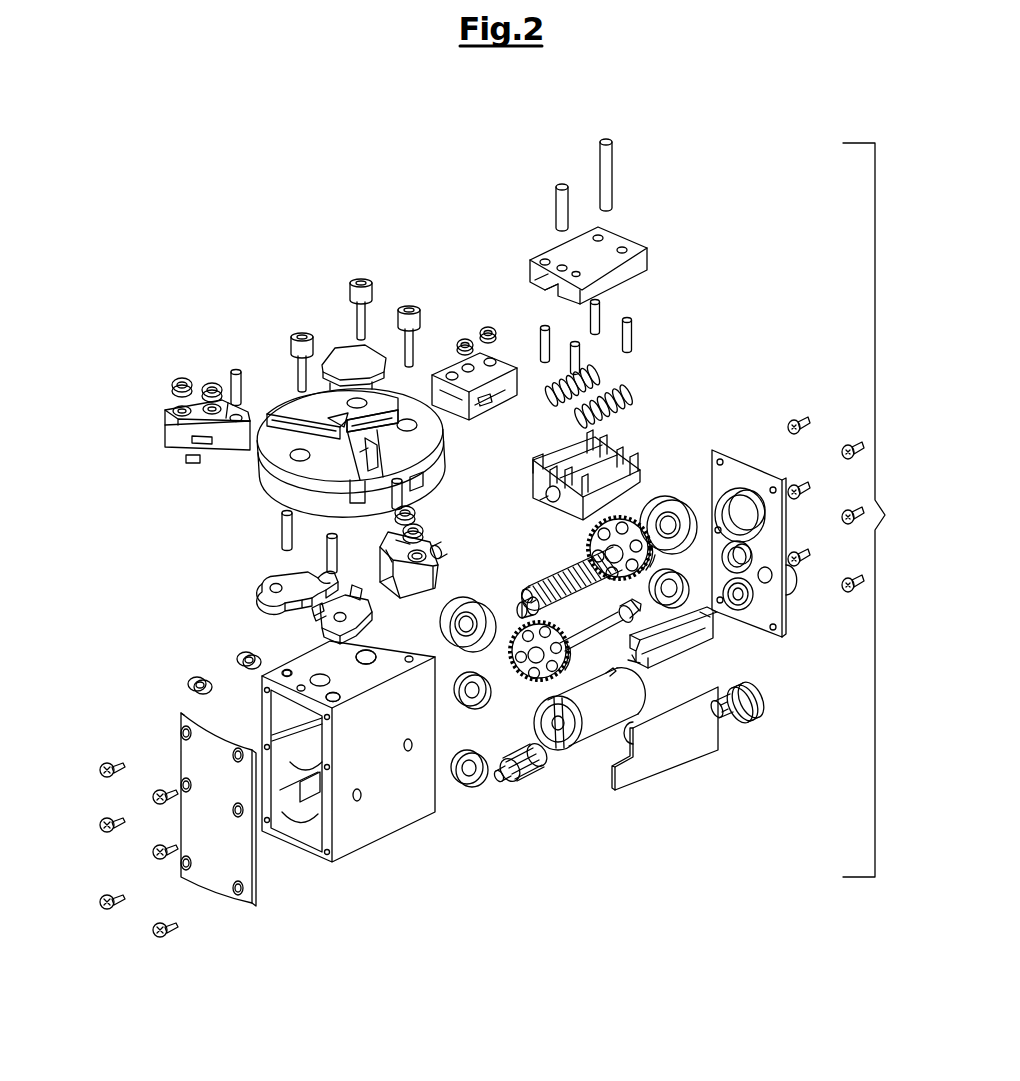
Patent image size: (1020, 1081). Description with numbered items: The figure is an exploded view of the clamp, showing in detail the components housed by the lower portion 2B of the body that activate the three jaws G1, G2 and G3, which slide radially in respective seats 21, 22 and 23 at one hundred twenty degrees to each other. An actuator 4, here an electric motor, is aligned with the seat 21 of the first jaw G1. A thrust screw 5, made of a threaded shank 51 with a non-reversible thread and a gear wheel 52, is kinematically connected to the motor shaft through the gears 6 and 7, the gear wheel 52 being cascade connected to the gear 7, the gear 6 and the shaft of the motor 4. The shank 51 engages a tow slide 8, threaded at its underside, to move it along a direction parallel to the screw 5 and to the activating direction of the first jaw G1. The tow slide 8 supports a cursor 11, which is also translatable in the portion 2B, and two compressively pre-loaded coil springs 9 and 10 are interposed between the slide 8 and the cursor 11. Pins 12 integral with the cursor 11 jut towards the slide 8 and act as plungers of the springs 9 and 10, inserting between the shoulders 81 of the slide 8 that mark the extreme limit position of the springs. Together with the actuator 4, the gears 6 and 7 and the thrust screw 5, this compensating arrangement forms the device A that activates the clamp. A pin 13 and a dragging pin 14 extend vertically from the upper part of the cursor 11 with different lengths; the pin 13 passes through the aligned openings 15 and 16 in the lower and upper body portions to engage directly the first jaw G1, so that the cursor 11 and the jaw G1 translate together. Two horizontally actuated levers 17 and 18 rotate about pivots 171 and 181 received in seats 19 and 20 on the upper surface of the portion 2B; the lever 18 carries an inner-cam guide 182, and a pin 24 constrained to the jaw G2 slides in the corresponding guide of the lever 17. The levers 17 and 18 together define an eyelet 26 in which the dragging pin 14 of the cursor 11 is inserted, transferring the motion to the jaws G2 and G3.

The lower portion 2B is at (376, 824).
The actuator 4 is at (591, 728).
The thrust screw 5 is at (597, 546).
The threaded shank 51 is at (570, 565).
The gear wheel 52 is at (628, 515).
The gear 6 is at (523, 762).
The gear 7 is at (580, 635).
The tow slide 8 is at (608, 468).
The shoulders 81 is at (640, 468).
The coil spring 9 is at (631, 396).
The coil spring 10 is at (598, 380).
The cursor 11 is at (634, 258).
The pins 12 is at (629, 318).
The pin 13 is at (612, 158).
The dragging pin 14 is at (558, 203).
The opening 15 is at (362, 656).
The opening 16 is at (362, 450).
The lever 17 is at (290, 580).
The pivot 171 is at (282, 538).
The lever 18 is at (372, 612).
The pivot 181 is at (337, 545).
The guide 182 is at (359, 598).
The seat 19 is at (287, 672).
The seat 20 is at (340, 697).
The seat 21 is at (408, 418).
The seat 22 is at (285, 425).
The seat 23 is at (313, 505).
The pin 24 is at (233, 380).
The eyelet 26 is at (312, 598).
The first jaw G1 is at (468, 408).
The second jaw G2 is at (185, 444).
The third jaw G3 is at (434, 590).
The device A is at (875, 510).